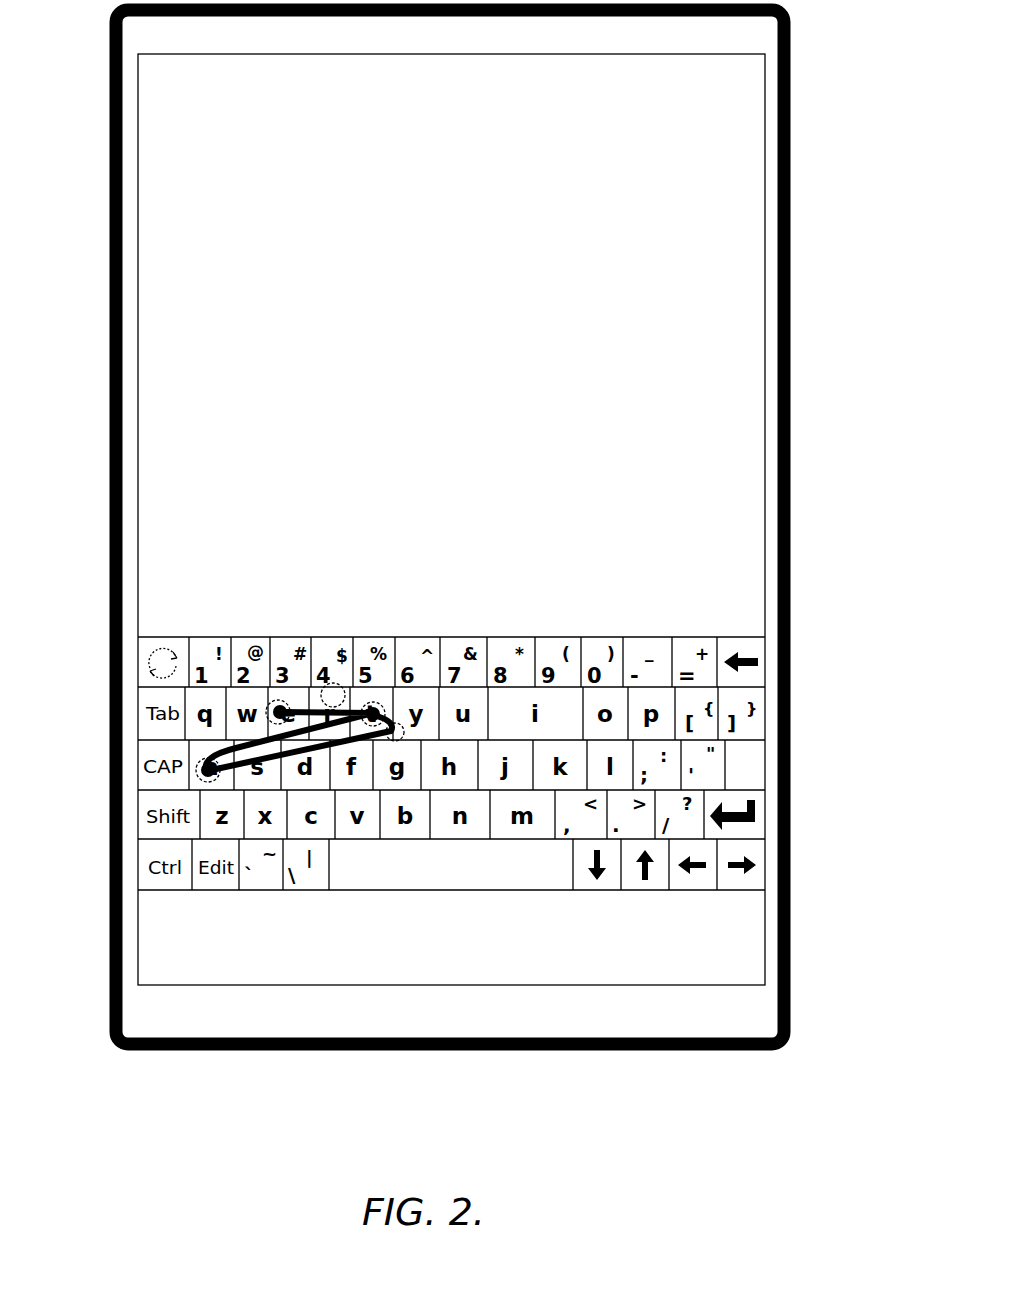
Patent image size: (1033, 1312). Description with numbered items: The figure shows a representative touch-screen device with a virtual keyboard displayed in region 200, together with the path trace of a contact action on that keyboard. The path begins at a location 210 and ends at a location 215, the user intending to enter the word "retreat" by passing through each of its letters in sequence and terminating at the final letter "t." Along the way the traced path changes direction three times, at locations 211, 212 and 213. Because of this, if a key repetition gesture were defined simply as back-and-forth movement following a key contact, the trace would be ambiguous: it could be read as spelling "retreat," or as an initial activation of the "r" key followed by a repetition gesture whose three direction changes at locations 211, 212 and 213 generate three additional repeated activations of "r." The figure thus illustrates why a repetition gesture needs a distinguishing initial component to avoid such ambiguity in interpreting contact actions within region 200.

The region 200 is at (818, 519).
The beginning location 210 is at (344, 690).
The first direction-change location 211 is at (267, 706).
The second direction-change location 212 is at (385, 712).
The third direction-change location 213 is at (197, 766).
The ending location 215 is at (404, 734).